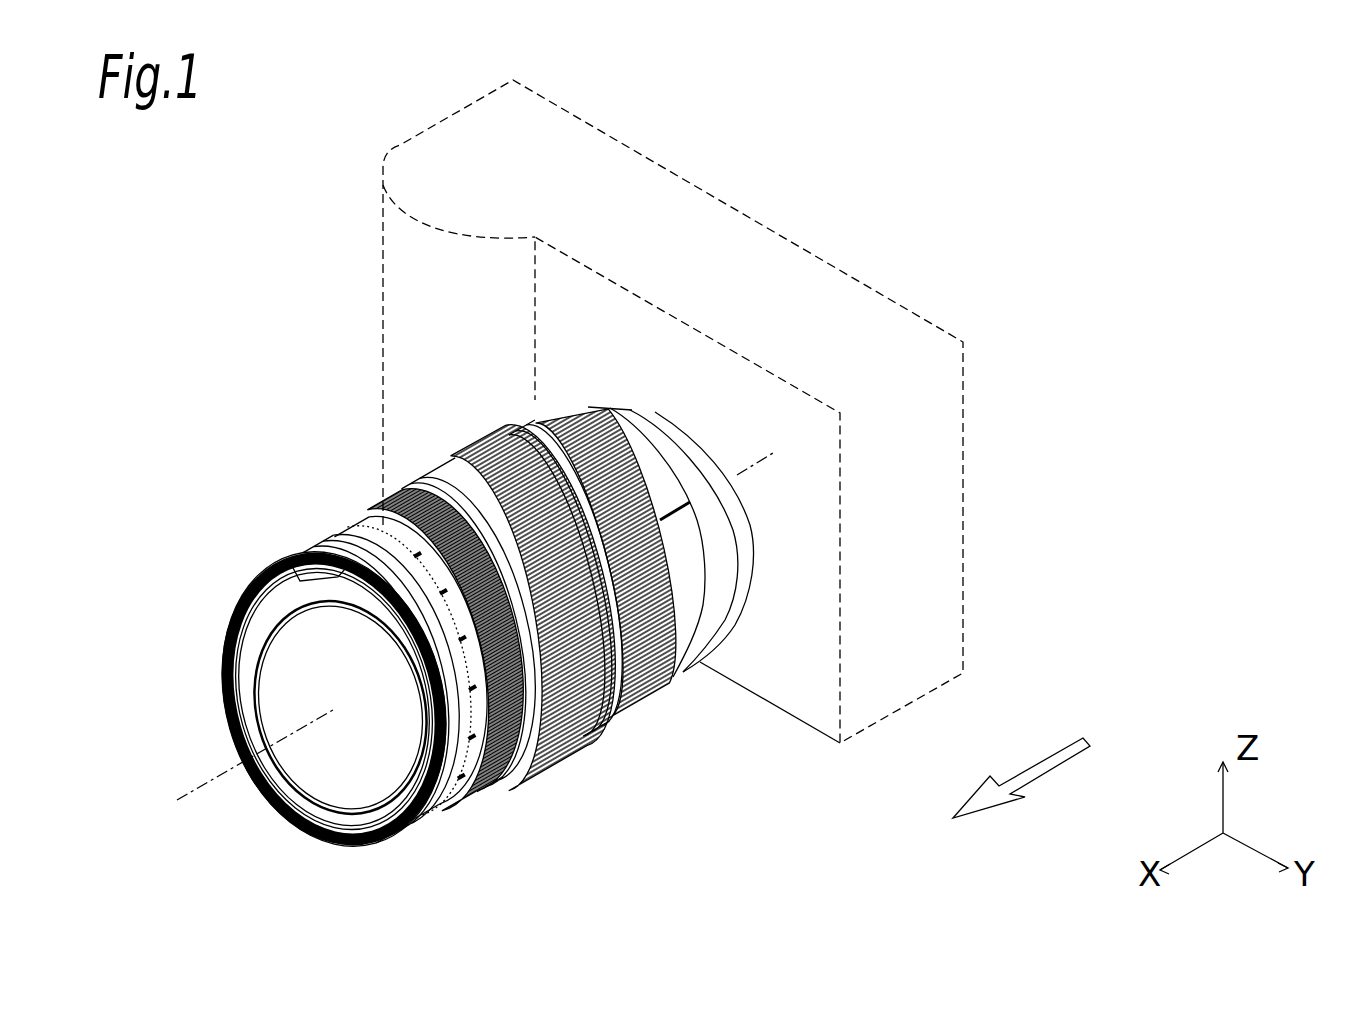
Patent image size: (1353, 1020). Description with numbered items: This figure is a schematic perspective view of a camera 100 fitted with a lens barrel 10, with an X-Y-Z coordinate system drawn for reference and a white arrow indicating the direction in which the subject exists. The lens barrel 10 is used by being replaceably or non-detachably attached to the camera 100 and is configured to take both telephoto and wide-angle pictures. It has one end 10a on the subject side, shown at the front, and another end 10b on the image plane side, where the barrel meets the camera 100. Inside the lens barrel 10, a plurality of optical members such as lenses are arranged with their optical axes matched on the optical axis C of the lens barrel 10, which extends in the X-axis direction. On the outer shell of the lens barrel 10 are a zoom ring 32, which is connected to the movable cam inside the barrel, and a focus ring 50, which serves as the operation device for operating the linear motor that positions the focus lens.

The lens barrel 10 is at (250, 498).
The one end 10a is at (325, 762).
The other end 10b is at (748, 513).
The zoom ring 32 is at (645, 702).
The focus ring 50 is at (530, 775).
The camera 100 is at (733, 240).
The optical axis C is at (215, 777).